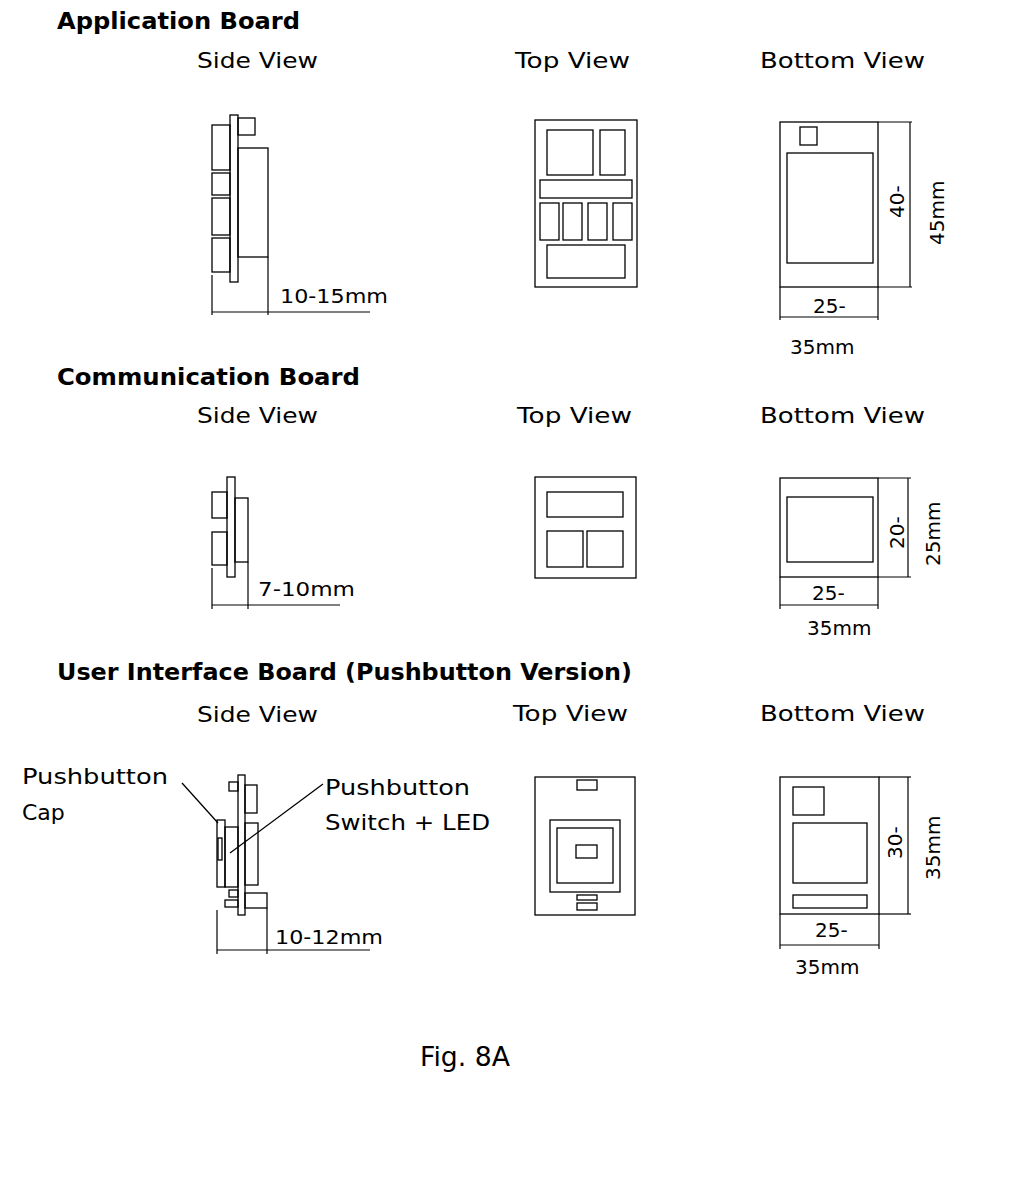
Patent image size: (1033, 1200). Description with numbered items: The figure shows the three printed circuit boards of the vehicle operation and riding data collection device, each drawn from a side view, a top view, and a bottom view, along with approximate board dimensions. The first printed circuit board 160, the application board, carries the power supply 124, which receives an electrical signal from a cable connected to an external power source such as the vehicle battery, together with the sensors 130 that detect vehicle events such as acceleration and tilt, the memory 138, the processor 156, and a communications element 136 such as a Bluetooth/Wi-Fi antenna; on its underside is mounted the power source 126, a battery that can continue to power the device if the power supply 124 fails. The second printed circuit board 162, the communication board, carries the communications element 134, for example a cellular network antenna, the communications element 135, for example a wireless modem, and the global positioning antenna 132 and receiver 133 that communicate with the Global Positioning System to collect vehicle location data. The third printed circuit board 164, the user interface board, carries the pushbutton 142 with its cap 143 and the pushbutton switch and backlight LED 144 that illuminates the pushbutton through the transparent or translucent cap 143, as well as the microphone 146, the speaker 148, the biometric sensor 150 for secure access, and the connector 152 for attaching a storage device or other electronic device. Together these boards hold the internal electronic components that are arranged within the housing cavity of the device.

The power supply 124 is at (212, 253).
The power source 126 is at (805, 181).
The sensors 130 is at (212, 210).
The communications element 136 is at (800, 136).
The memory 138 is at (212, 175).
The processor 156 is at (212, 143).
The first printed circuit board 160 is at (230, 115).
The global positioning antenna 132 is at (623, 545).
The receiver 133 is at (212, 552).
The communications element 134 is at (212, 503).
The communications element 135 is at (248, 500).
The second printed circuit board 162 is at (227, 480).
The pushbutton 142 is at (217, 823).
The cap 143 is at (217, 834).
The pushbutton switch and backlight LED 144 is at (230, 873).
The microphone 146 is at (230, 896).
The speaker 148 is at (230, 788).
The biometric sensor 150 is at (217, 857).
The connector 152 is at (230, 903).
The third printed circuit board 164 is at (248, 778).